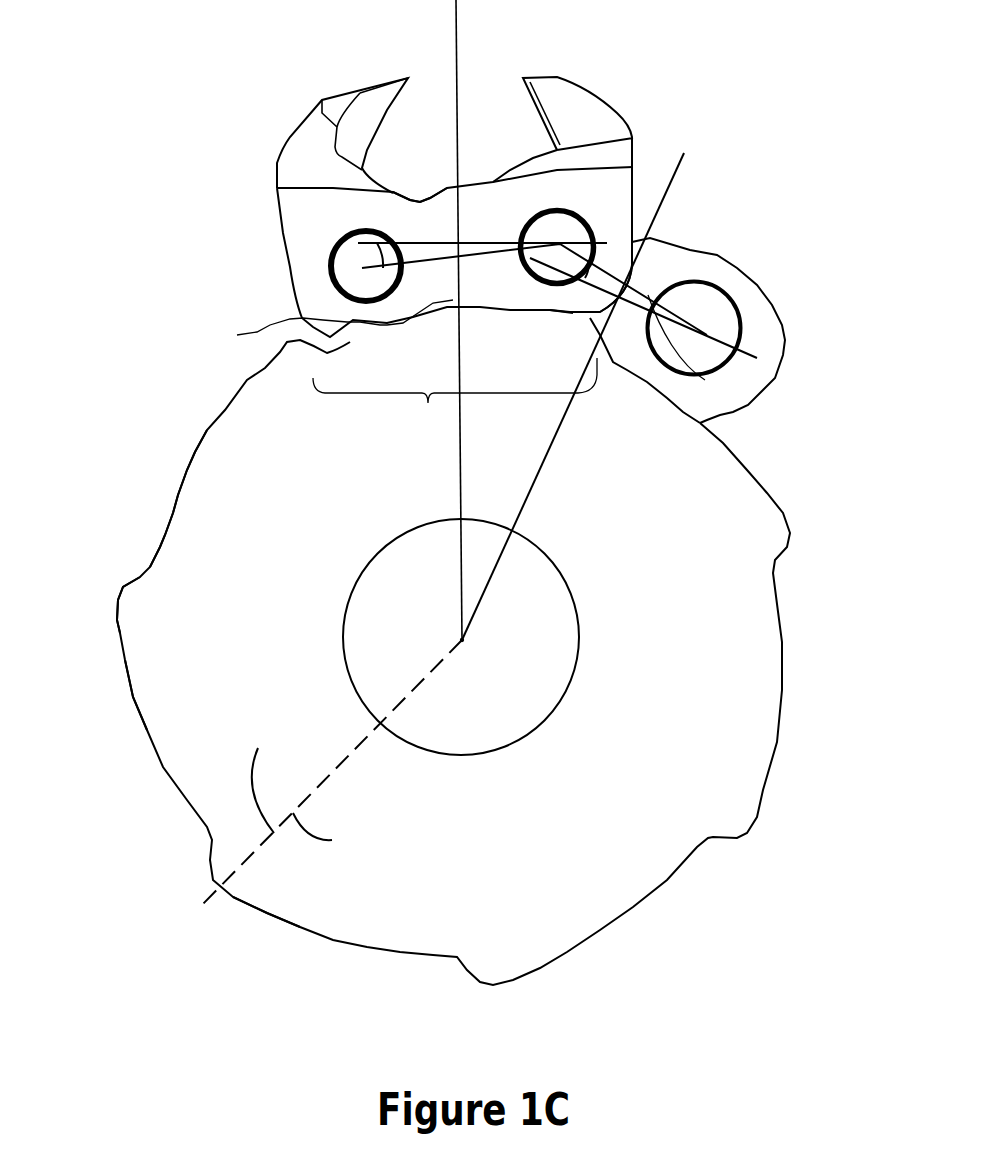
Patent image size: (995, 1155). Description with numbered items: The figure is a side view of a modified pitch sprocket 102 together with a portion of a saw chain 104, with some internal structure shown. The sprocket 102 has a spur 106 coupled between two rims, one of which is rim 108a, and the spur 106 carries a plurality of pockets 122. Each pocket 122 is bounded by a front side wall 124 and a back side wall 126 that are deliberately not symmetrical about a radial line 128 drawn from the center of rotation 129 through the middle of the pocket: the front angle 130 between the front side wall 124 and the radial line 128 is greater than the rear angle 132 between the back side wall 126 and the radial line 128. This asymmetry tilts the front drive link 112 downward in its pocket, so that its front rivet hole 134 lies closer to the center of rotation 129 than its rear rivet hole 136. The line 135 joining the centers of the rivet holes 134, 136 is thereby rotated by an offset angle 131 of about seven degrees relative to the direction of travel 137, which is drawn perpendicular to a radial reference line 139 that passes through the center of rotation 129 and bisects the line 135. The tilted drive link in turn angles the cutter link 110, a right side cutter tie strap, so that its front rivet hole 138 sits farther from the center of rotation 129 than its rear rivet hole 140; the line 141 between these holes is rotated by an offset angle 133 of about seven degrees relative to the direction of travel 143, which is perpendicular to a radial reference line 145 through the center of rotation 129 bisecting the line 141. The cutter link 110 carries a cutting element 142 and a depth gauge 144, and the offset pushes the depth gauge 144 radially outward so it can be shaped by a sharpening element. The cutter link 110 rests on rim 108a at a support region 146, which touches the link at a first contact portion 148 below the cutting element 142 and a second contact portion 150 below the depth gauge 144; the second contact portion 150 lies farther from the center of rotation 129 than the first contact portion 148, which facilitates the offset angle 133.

The sprocket 102 is at (737, 901).
The saw chain 104 is at (770, 170).
The spur 106 is at (240, 497).
The rim 108a is at (122, 617).
The cutter link 110 is at (305, 203).
The front drive link 112 is at (767, 327).
The pockets 122 is at (197, 602).
The front side wall 124 is at (213, 742).
The back side wall 126 is at (330, 863).
The radial line 128 is at (247, 855).
The center of rotation 129 is at (463, 645).
The front angle 130 is at (253, 793).
The offset angle 131 is at (597, 255).
The rear angle 132 is at (303, 827).
The offset angle 133 is at (377, 253).
The front rivet hole 134 is at (717, 317).
The line 135 is at (622, 316).
The rear rivet hole 136 is at (577, 233).
The direction of travel 137 is at (705, 380).
The front rivet hole 138 is at (560, 235).
The radial reference line 139 is at (485, 600).
The rear rivet hole 140 is at (347, 270).
The line 141 is at (397, 255).
The cutting element 142 is at (365, 83).
The direction of travel 143 is at (399, 208).
The depth gauge 144 is at (550, 77).
The radial reference line 145 is at (467, 573).
The support region 146 is at (455, 398).
The first contact portion 148 is at (318, 327).
The second contact portion 150 is at (557, 307).